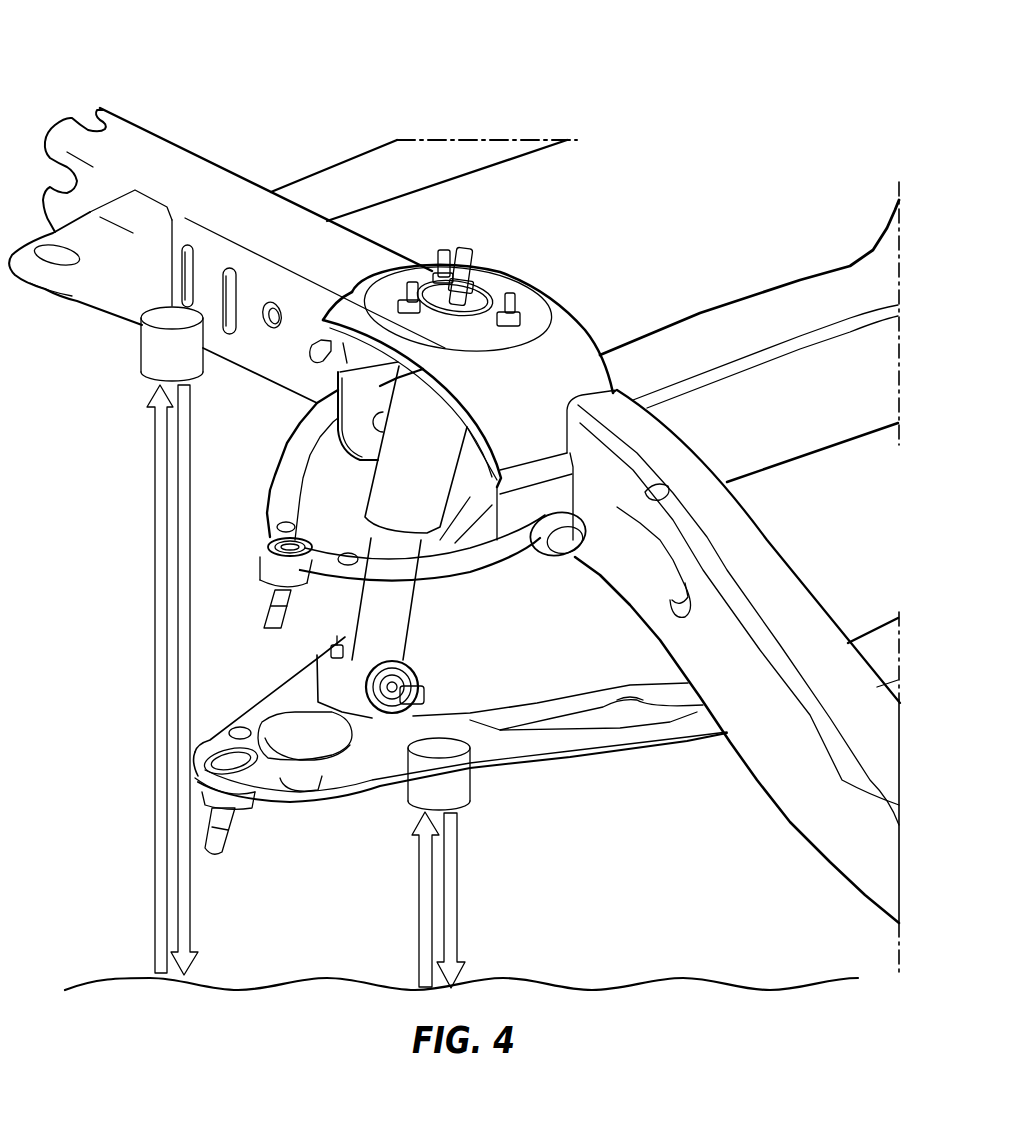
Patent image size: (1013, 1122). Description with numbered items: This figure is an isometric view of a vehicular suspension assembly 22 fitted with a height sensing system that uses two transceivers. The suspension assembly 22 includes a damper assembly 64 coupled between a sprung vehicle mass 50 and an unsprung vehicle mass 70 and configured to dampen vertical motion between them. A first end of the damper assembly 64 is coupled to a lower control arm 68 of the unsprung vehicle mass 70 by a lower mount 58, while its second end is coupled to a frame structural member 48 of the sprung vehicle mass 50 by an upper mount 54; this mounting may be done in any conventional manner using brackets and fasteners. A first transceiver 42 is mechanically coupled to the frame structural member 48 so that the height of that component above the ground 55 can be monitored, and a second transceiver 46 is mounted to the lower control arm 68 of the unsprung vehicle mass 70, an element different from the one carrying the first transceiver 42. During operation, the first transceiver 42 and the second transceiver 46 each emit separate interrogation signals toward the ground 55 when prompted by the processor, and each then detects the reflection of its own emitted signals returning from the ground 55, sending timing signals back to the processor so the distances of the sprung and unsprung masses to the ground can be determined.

The suspension assembly 22 is at (790, 84).
The first transceiver 42 is at (140, 347).
The second transceiver 46 is at (473, 787).
The frame structural member 48 is at (172, 156).
The sprung vehicle mass 50 is at (82, 82).
The upper mount 54 is at (470, 295).
The ground 55 is at (619, 977).
The lower mount 58 is at (424, 700).
The damper assembly 64 is at (392, 618).
The lower control arm 68 is at (267, 770).
The unsprung vehicle mass 70 is at (460, 782).